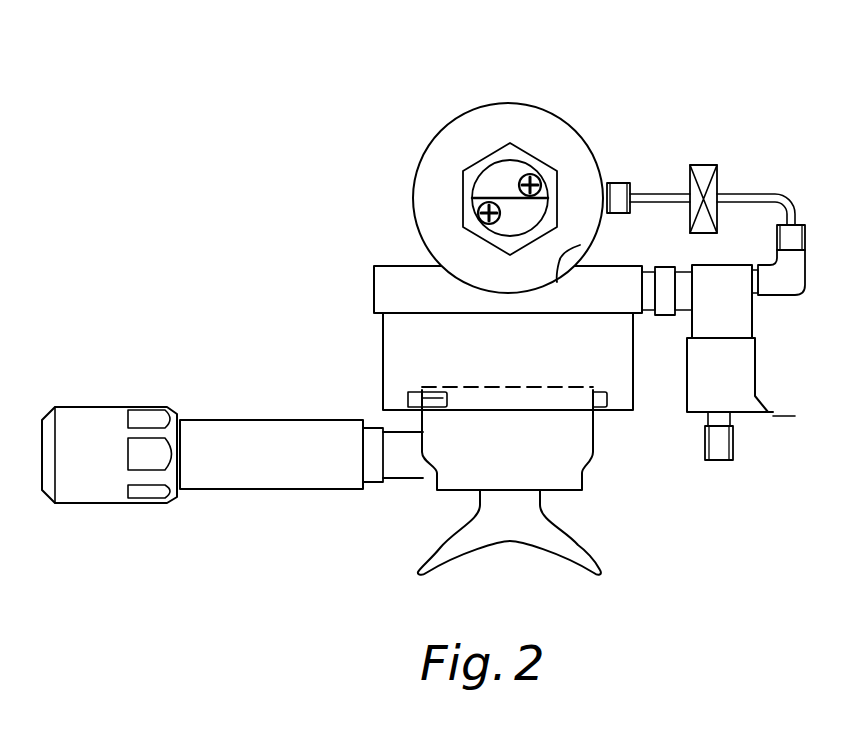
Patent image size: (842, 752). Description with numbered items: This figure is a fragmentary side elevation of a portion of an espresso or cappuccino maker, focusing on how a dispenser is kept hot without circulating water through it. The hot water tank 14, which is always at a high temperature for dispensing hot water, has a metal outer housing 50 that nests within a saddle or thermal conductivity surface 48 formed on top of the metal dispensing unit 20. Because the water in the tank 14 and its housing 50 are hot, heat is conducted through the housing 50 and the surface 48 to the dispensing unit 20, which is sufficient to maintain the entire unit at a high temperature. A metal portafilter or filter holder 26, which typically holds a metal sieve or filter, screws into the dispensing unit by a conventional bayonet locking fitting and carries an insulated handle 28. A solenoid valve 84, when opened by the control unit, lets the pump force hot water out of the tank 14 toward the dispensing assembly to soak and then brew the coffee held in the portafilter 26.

The hot water tank 14 is at (518, 103).
The right-hand dispensing assembly 20 is at (362, 286).
The portafilter 26 is at (370, 358).
The insulated handle 28 is at (300, 491).
The thermal conductivity surface 48 is at (580, 245).
The outer housing 50 is at (455, 280).
The solenoid valve 84 is at (730, 316).